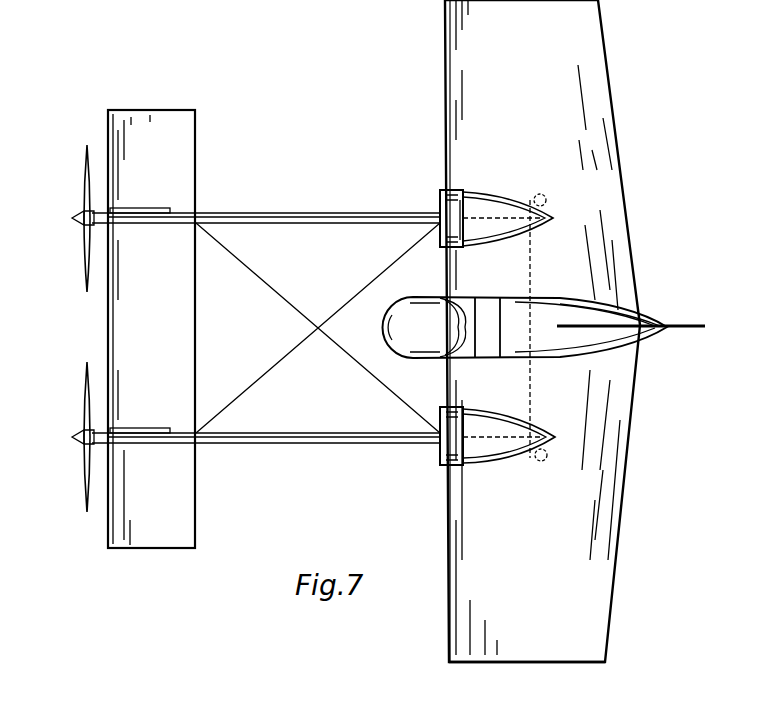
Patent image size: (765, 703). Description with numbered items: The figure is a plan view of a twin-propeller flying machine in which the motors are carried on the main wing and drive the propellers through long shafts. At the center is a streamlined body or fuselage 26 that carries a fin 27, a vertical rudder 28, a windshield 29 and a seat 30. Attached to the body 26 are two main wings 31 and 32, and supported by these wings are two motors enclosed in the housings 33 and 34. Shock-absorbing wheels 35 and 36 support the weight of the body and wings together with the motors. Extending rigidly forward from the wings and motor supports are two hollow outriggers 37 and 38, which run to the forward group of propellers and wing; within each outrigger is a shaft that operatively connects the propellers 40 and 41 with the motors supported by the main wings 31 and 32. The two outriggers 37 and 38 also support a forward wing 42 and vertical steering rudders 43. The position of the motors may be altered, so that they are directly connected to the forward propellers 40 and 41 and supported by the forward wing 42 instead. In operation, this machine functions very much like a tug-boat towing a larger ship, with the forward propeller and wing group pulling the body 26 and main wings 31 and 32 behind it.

The streamlined body 26 is at (525, 327).
The fin 27 is at (600, 330).
The vertical rudder 28 is at (694, 329).
The windshield 29 is at (453, 327).
The seat 30 is at (487, 327).
The wing 31 is at (527, 592).
The wing 32 is at (542, 331).
The motor housing 33 is at (497, 436).
The motor housing 34 is at (496, 218).
The shock-absorbing wheel 35 is at (544, 458).
The shock-absorbing wheel 36 is at (542, 196).
The hollow outrigger 37 is at (302, 442).
The hollow outrigger 38 is at (298, 214).
The propeller 40 is at (88, 457).
The propeller 41 is at (88, 199).
The forward wing 42 is at (151, 329).
The vertical steering rudder 43 is at (132, 210).